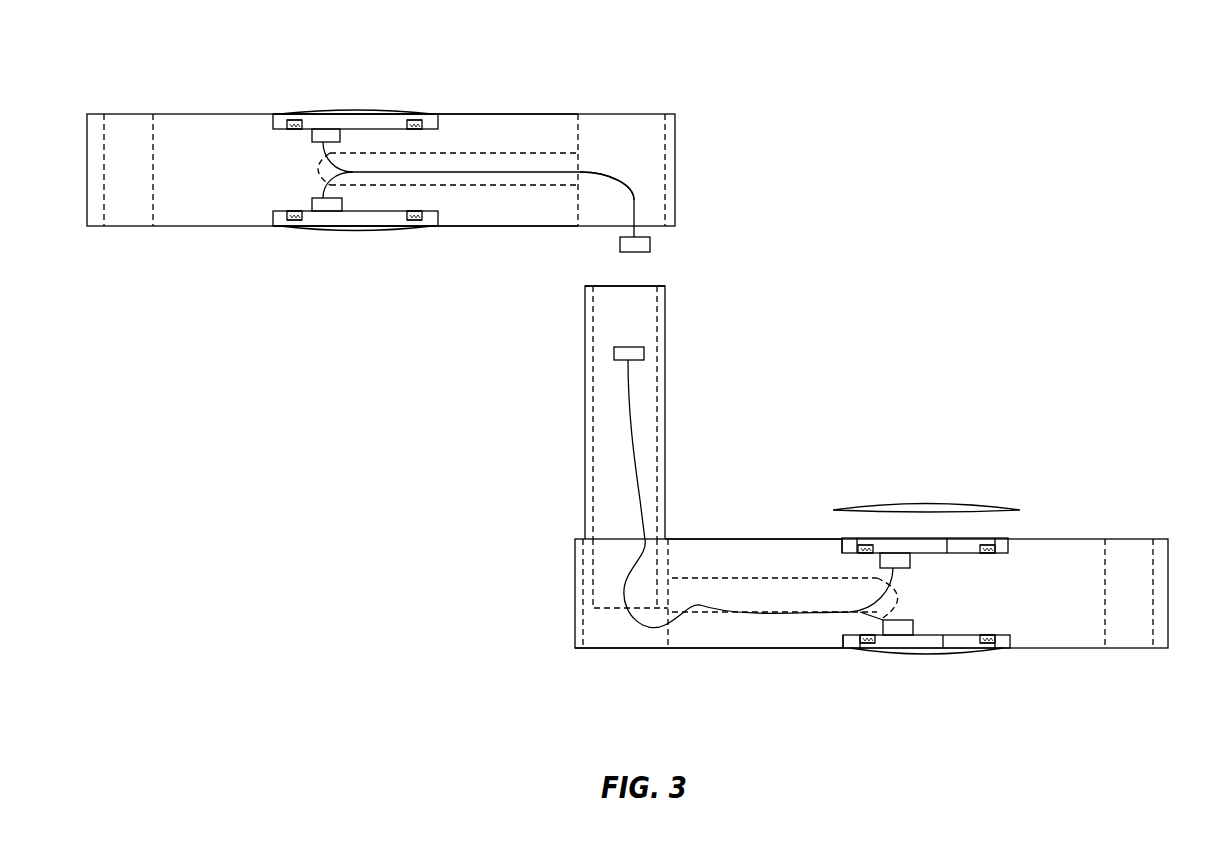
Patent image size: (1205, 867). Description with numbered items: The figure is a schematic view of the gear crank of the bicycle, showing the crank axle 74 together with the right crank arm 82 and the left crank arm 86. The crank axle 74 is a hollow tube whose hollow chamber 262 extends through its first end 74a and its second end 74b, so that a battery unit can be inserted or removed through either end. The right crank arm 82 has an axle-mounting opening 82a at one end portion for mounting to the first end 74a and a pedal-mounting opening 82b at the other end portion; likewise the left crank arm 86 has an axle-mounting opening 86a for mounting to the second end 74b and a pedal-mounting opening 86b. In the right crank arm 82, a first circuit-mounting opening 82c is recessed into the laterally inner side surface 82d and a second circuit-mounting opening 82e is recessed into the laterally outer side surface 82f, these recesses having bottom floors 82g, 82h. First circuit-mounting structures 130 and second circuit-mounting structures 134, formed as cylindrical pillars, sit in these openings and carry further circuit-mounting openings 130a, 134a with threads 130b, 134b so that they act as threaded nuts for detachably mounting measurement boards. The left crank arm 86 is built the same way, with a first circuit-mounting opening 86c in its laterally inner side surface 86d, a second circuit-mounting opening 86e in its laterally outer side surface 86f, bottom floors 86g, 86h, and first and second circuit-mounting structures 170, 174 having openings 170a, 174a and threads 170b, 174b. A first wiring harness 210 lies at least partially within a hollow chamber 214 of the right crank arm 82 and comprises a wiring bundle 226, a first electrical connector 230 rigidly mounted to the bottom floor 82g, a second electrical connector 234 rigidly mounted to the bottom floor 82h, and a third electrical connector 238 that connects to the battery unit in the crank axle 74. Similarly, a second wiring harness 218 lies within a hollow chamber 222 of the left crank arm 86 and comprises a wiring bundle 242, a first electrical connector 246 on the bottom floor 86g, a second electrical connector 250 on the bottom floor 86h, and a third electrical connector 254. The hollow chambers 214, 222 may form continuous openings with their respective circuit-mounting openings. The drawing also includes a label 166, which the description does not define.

The crank axle 74 is at (585, 370).
The first end of crank axle 74a is at (620, 612).
The second end of crank axle 74b is at (667, 292).
The right crank arm 82 is at (752, 539).
The axle-mounting opening 82a is at (588, 637).
The pedal-mounting opening 82b is at (1107, 620).
The first circuit-mounting opening 82c is at (848, 545).
The laterally inner side surface 82d is at (695, 539).
The second circuit-mounting opening 82e is at (852, 648).
The laterally outer side surface 82f is at (695, 652).
The bottom floor 82g is at (948, 540).
The bottom floor 82h is at (945, 650).
The left crank arm 86 is at (562, 114).
The axle-mounting opening 86a is at (665, 105).
The pedal-mounting opening 86b is at (153, 107).
The first circuit-mounting opening 86c is at (388, 228).
The laterally inner side surface 86d is at (510, 226).
The second circuit-mounting opening 86e is at (385, 120).
The laterally outer side surface 86f is at (500, 114).
The bottom floor 86g is at (362, 229).
The bottom floor 86h is at (364, 128).
The first circuit-mounting structures 130 is at (858, 545).
The circuit-mounting openings 130a is at (865, 556).
The threads 130b is at (874, 541).
The second circuit-mounting structures 134 is at (858, 648).
The circuit-mounting openings 134a is at (862, 646).
The threads 134b is at (862, 636).
The mounting plate 166 is at (345, 110).
The first circuit-mounting structures 170 is at (300, 227).
The circuit-mounting openings 170a is at (290, 213).
The threads 170b is at (295, 226).
The second circuit-mounting structures 174 is at (297, 120).
The circuit-mounting openings 174a is at (295, 129).
The threads 174b is at (290, 115).
The first wiring harness 210 is at (602, 440).
The hollow chamber 214 is at (728, 620).
The second wiring harness 218 is at (473, 145).
The hollow chamber 222 is at (490, 198).
The wiring bundle 226 is at (633, 482).
The first electrical connector 230 is at (910, 562).
The second electrical connector 234 is at (913, 622).
The third electrical connector 238 is at (624, 352).
The wiring bundle 242 is at (622, 182).
The first electrical connector 246 is at (310, 197).
The second electrical connector 250 is at (310, 143).
The third electrical connector 254 is at (652, 245).
The hollow chamber 262 is at (610, 409).